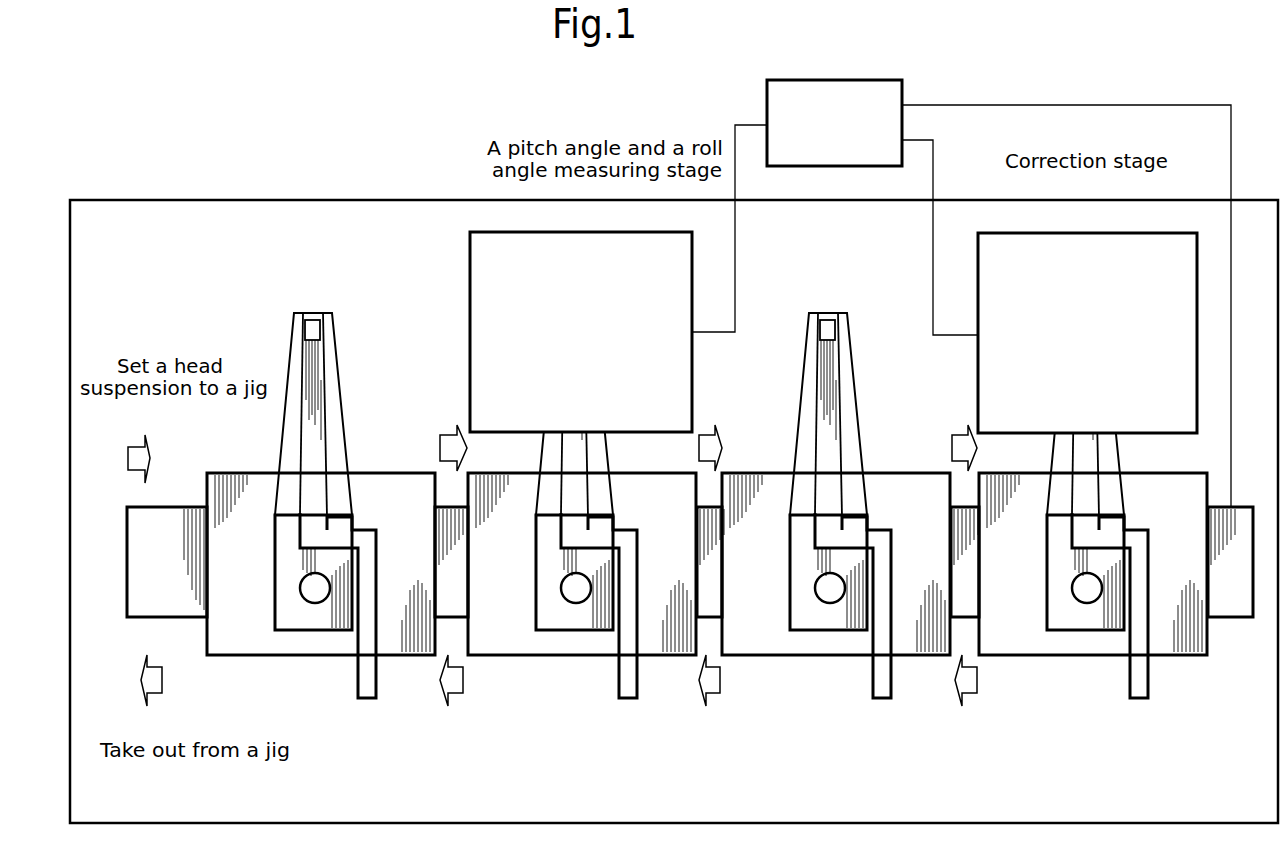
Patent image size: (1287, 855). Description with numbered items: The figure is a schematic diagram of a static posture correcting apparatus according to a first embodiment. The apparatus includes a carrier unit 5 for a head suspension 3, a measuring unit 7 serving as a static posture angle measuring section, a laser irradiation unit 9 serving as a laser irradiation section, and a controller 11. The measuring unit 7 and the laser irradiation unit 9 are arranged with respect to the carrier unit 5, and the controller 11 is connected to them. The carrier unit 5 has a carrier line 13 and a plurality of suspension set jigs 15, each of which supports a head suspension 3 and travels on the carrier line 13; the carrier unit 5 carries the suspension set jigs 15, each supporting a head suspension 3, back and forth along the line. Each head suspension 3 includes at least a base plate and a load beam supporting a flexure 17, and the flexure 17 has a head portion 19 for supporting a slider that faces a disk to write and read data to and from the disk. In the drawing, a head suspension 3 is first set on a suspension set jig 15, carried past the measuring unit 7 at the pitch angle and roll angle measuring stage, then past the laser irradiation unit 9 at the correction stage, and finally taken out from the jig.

The head suspension 3 is at (343, 372).
The carrier unit 5 is at (171, 505).
The measuring unit 7 is at (693, 372).
The laser irradiation unit 9 is at (978, 368).
The controller 11 is at (857, 80).
The carrier line 13 is at (168, 572).
The suspension set jig 15 is at (253, 656).
The flexure 17 is at (327, 425).
The head portion 19 is at (311, 320).